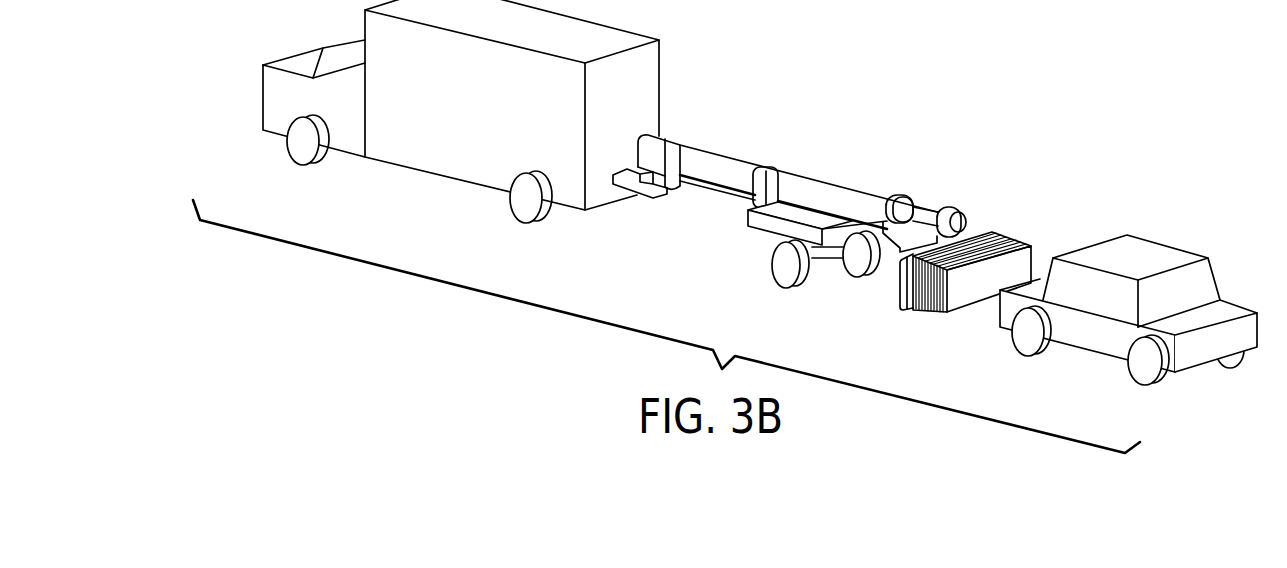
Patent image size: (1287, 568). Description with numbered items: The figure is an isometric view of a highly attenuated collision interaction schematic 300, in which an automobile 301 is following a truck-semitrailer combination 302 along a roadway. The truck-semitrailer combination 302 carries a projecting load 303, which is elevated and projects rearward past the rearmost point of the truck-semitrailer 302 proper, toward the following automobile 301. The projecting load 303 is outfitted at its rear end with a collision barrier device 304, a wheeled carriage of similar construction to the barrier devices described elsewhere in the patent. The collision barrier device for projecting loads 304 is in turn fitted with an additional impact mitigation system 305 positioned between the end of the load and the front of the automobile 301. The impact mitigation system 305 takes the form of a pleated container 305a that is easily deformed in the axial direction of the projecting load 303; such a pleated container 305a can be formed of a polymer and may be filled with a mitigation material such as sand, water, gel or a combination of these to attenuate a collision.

The highly attenuated collision interaction schematic 300 is at (958, 60).
The automobile 301 is at (1172, 243).
The truck-semitrailer combination 302 is at (674, 92).
The projecting load 303 is at (843, 178).
The collision barrier device 304 is at (896, 250).
The impact mitigation system 305 is at (1009, 240).
The pleated container 305a is at (923, 313).